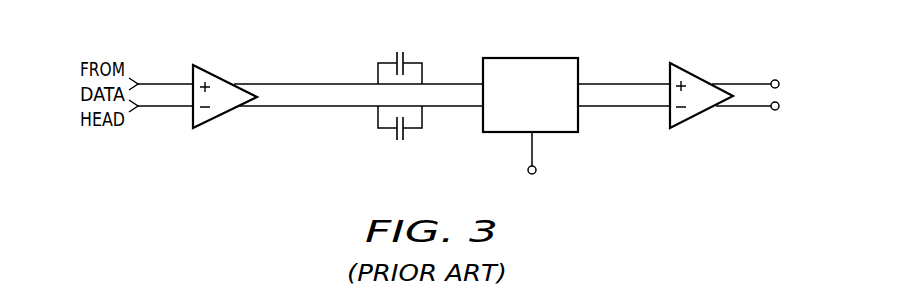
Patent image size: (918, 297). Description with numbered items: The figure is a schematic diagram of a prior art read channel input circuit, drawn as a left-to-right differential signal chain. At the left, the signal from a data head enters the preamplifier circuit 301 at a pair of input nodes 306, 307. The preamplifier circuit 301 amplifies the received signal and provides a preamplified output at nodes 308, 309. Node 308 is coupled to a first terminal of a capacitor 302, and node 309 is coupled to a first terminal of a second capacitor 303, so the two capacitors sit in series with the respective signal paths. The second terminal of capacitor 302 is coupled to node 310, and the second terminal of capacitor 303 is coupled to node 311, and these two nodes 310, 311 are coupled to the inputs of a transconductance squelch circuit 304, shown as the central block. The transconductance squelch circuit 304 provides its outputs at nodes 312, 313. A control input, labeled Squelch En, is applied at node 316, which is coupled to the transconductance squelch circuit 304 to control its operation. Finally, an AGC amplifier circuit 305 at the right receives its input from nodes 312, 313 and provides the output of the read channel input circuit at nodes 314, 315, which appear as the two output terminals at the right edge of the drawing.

The preamplifier circuit 301 is at (213, 118).
The capacitor 302 is at (393, 53).
The capacitor 303 is at (397, 141).
The transconductance squelch circuit 304 is at (532, 58).
The AGC amplifier circuit 305 is at (685, 123).
The node 306 is at (160, 83).
The node 307 is at (160, 107).
The node 308 is at (305, 84).
The node 309 is at (305, 106).
The node 310 is at (463, 84).
The node 311 is at (463, 106).
The node 312 is at (627, 84).
The node 313 is at (627, 106).
The node 314 is at (755, 84).
The node 315 is at (755, 106).
The node 316 is at (532, 148).